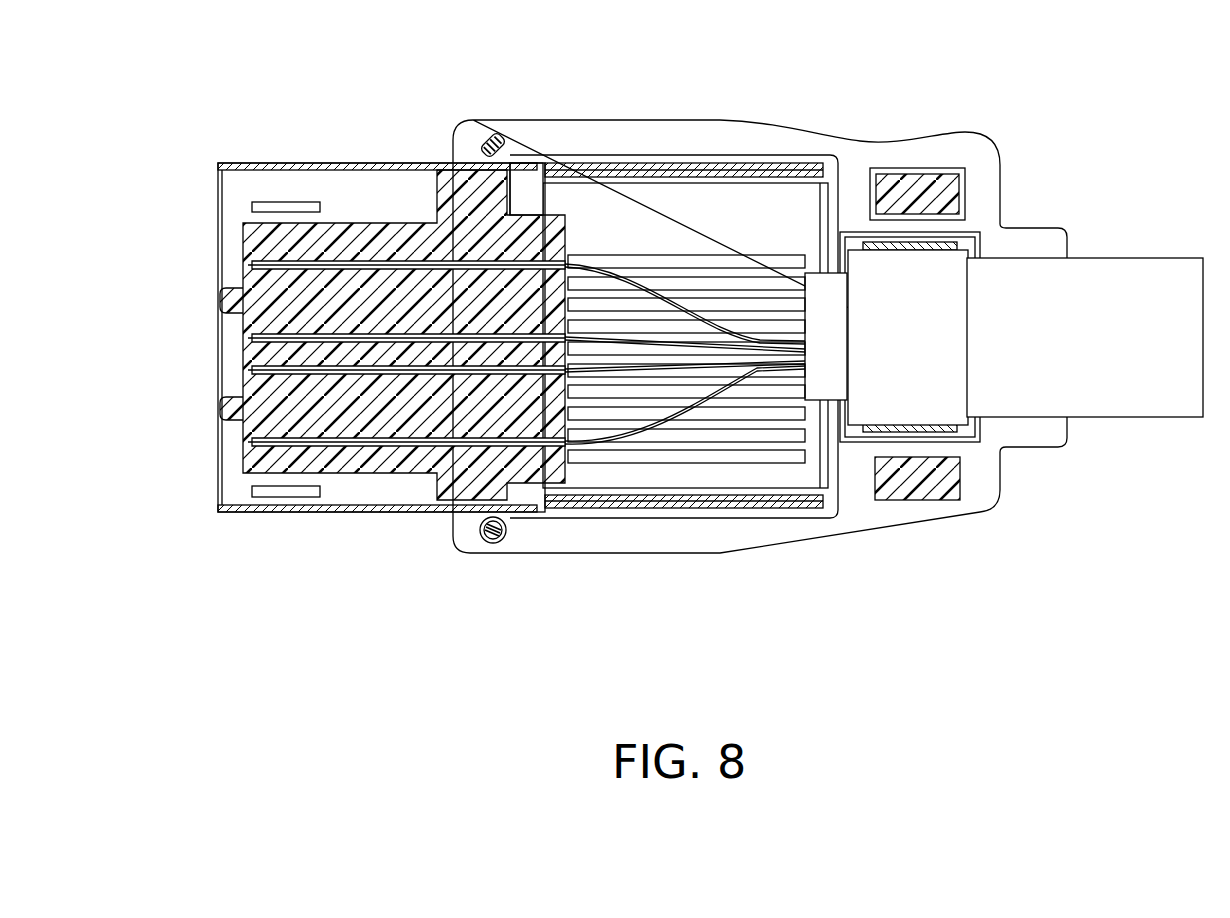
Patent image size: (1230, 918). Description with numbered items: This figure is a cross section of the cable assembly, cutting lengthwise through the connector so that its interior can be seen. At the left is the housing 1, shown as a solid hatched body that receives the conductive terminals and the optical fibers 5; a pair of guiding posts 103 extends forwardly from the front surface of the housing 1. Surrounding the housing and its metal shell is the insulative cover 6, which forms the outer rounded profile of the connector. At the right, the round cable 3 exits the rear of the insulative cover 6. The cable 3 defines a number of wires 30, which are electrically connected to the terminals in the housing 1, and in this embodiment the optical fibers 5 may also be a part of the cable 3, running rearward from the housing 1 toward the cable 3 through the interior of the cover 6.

The housing 1 is at (472, 200).
The round cable 3 is at (1113, 305).
The optical fibers 5 is at (673, 413).
The insulative cover 6 is at (628, 135).
The wires 30 is at (728, 457).
The guiding posts 103 is at (230, 300).